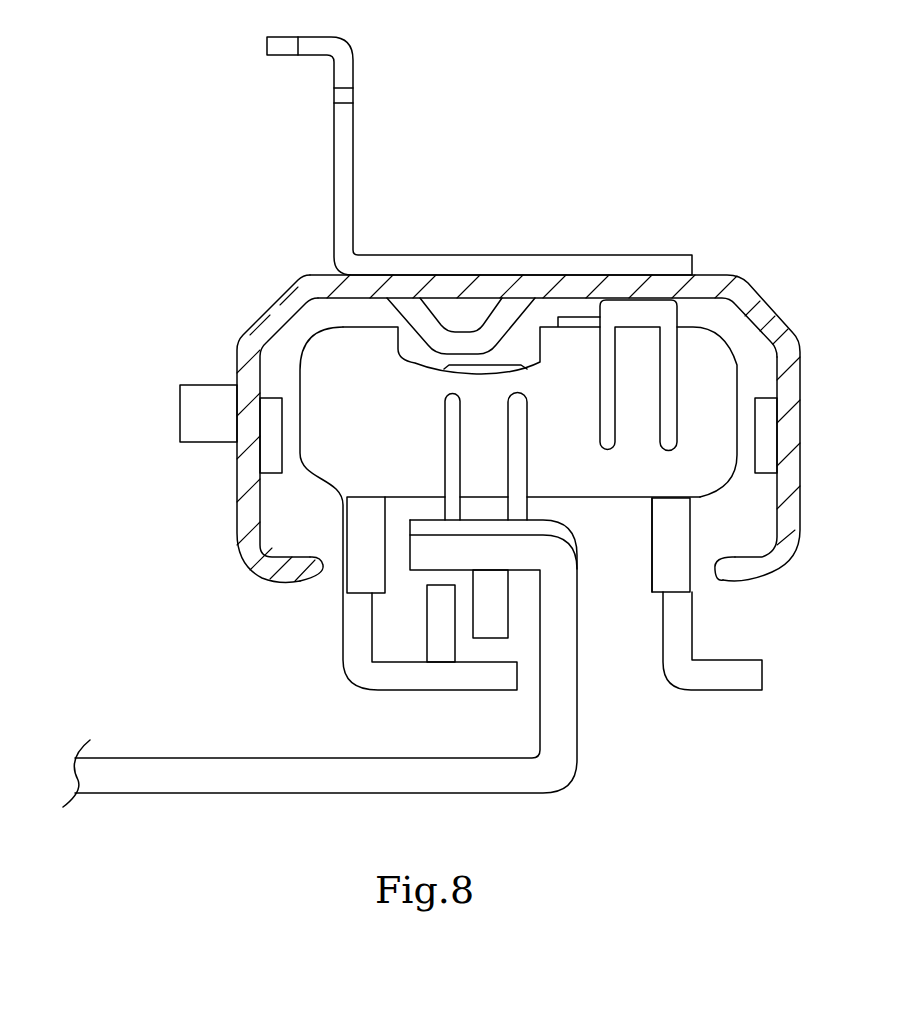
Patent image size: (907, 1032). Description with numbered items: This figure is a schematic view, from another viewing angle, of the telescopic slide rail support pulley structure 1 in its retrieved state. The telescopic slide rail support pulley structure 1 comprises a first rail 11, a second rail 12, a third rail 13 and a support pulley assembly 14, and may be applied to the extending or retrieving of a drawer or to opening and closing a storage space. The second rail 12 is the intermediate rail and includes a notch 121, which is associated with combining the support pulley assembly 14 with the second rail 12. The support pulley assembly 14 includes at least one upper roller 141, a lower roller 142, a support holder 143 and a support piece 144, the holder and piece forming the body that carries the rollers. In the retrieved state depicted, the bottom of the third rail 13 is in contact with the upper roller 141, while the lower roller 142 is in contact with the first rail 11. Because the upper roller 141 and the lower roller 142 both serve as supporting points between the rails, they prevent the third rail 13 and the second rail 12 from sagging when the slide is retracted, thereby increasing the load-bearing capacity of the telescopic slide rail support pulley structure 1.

The telescopic slide rail support pulley structure 1 is at (672, 787).
The first rail 11 is at (432, 518).
The second rail 12 is at (693, 622).
The notch 121 is at (612, 514).
The third rail 13 is at (280, 300).
The support pulley assembly 14 is at (297, 362).
The upper roller 141 is at (643, 310).
The lower roller 142 is at (487, 507).
The support holder 143 is at (703, 366).
The support piece 144 is at (670, 528).